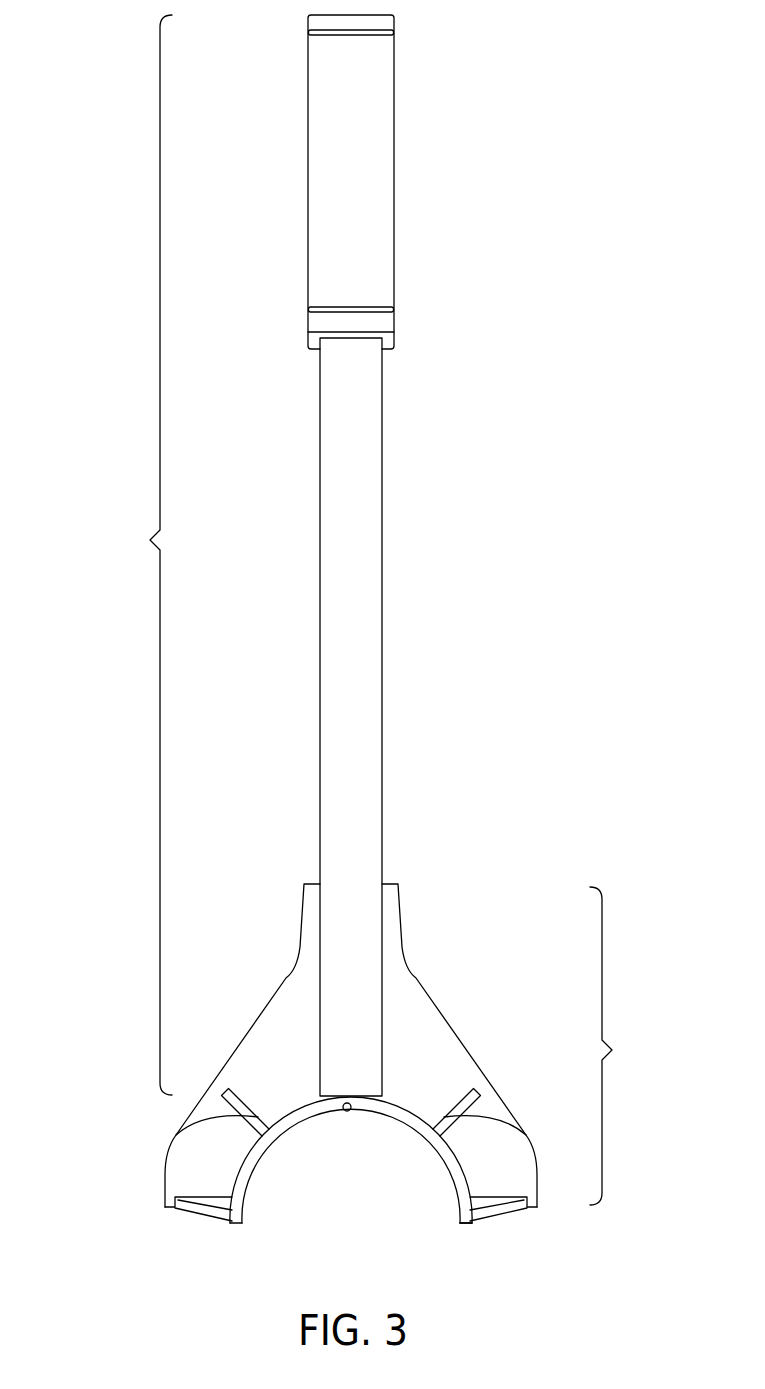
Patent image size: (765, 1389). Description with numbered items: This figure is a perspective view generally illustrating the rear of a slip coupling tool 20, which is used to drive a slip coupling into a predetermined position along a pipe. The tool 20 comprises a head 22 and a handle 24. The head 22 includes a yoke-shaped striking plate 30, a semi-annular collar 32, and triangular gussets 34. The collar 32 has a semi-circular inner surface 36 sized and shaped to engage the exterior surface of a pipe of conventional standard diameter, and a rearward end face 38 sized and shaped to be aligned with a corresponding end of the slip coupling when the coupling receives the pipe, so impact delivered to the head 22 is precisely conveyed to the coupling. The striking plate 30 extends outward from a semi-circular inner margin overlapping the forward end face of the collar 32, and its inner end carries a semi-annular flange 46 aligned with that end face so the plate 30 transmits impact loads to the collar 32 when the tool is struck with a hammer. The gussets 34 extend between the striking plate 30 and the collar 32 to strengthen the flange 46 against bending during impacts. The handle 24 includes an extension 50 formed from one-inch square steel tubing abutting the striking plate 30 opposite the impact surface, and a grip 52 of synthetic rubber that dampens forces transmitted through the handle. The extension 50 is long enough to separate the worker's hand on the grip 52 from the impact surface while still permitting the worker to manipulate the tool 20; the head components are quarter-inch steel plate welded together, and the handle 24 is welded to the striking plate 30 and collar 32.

The slip coupling tool 20 is at (562, 322).
The head 22 is at (618, 1046).
The handle 24 is at (145, 555).
The striking plate 30 is at (432, 995).
The semi-annular collar 32 is at (468, 1226).
The triangular gussets 34 is at (177, 1138).
The semi-circular inner surface 36 is at (451, 1172).
The rearward end face 38 is at (346, 1112).
The semi-annular flange 46 is at (165, 1184).
The extension 50 is at (320, 614).
The grip 52 is at (308, 178).